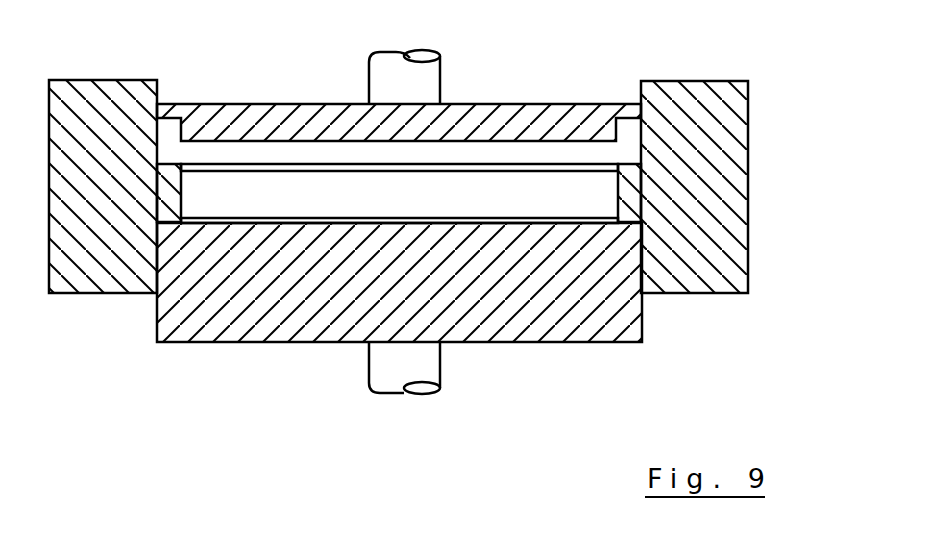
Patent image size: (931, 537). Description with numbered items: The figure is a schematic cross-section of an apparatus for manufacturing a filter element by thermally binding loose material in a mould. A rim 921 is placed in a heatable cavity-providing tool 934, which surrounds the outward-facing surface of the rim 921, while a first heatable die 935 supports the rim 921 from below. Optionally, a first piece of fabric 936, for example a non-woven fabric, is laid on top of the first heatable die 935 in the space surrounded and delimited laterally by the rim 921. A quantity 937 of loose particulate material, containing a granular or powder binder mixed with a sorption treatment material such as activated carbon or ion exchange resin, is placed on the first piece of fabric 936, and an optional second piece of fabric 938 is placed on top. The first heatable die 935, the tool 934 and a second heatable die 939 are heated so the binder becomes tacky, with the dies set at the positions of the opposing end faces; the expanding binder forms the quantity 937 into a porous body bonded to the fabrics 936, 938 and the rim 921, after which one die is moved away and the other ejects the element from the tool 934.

The heatable cavity-providing tool 934 is at (707, 103).
The second heatable die 939 is at (463, 117).
The second piece of fabric 938 is at (577, 168).
The rim 921 is at (632, 165).
The first piece of fabric 936 is at (553, 217).
The quantity of loose material 937 is at (425, 206).
The first heatable die 935 is at (624, 265).